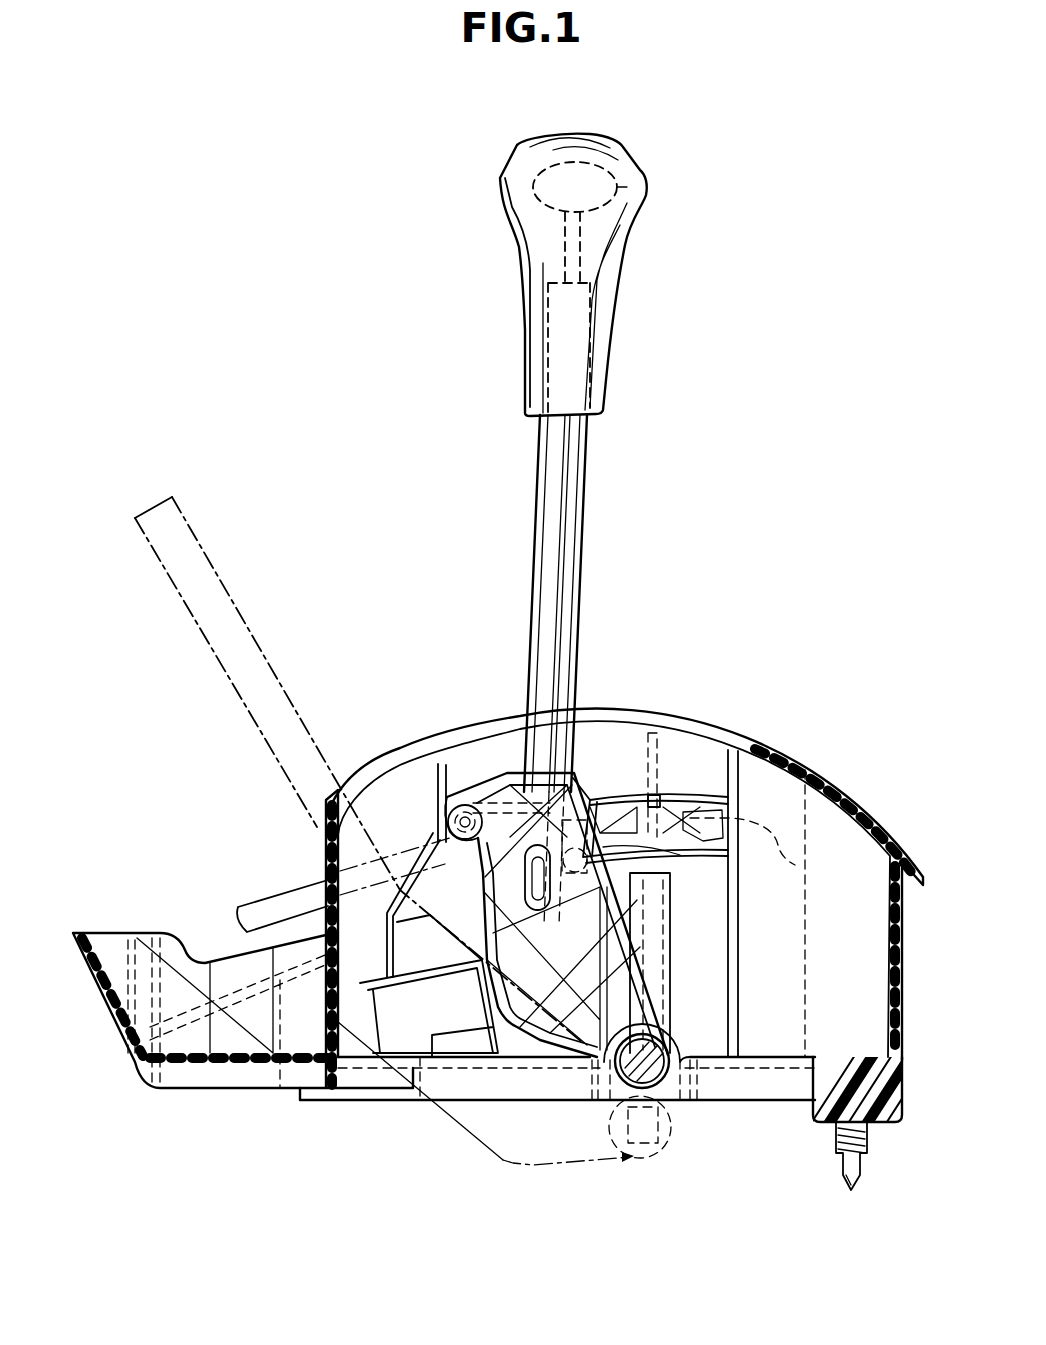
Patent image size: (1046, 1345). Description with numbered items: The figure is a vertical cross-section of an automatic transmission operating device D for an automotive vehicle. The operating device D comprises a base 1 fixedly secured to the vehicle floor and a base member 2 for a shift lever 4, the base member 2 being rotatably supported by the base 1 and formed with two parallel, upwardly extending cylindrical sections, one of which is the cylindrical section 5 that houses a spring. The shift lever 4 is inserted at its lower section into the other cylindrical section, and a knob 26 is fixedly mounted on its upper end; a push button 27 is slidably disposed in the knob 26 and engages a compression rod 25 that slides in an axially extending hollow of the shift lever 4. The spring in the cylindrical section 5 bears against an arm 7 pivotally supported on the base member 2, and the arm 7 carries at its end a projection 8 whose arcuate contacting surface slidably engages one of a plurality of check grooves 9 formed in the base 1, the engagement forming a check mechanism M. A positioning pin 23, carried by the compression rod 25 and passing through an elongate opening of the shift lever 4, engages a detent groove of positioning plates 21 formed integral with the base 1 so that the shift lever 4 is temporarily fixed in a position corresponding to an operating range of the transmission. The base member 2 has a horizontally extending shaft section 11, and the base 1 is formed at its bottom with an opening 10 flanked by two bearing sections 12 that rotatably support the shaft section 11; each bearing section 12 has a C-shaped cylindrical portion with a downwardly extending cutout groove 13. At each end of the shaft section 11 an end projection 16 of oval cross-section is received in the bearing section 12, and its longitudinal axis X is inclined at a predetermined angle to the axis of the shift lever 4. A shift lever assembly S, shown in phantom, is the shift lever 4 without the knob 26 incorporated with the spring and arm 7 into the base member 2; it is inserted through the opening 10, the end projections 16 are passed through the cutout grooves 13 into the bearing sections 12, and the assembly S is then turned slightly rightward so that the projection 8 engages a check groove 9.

The base 1 is at (360, 1105).
The base member 2 is at (447, 796).
The shift lever 4 is at (575, 556).
The cylindrical section 5 is at (655, 903).
The arm 7 is at (675, 793).
The projection 8 is at (690, 790).
The check grooves 9 is at (770, 810).
The opening 10 is at (763, 1090).
The shaft section 11 is at (632, 1160).
The bearing sections 12 is at (688, 1033).
The cutout groove 13 is at (640, 1030).
The end projection 16 is at (662, 1027).
The positioning plates 21 is at (622, 793).
The positioning pin 23 is at (484, 774).
The compression rod 25 is at (578, 243).
The knob 26 is at (612, 305).
The push button 27 is at (620, 178).
The operating device D is at (768, 505).
The shift lever assembly S is at (248, 605).
The check mechanism M is at (708, 838).
The longitudinal axis X is at (707, 997).